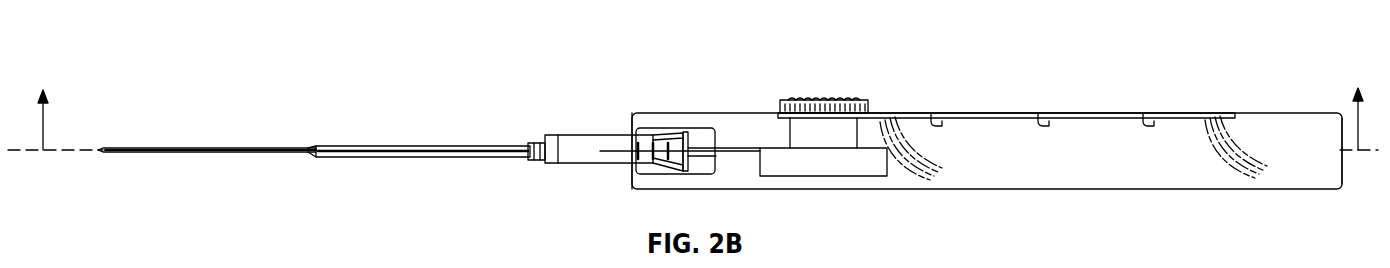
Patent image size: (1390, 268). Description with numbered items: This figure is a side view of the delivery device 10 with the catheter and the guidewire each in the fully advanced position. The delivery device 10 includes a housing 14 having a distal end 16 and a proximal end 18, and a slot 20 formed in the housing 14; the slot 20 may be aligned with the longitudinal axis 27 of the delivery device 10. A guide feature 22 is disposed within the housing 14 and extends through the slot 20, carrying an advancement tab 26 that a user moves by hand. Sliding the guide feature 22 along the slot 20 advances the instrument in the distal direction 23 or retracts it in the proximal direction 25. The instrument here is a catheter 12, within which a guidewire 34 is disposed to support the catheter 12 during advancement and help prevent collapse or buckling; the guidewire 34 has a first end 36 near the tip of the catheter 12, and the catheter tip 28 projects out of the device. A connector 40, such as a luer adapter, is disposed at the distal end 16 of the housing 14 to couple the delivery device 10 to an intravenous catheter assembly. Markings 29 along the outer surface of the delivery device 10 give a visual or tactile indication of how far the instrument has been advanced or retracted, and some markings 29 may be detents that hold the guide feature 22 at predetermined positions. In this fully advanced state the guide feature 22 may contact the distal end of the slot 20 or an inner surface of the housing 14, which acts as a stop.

The delivery device 10 is at (1269, 35).
The catheter 12 is at (728, 148).
The housing 14 is at (1258, 113).
The distal end 16 is at (661, 66).
The proximal end 18 is at (1307, 107).
The slot 20 is at (1073, 113).
The guide feature 22 is at (867, 162).
The distal direction 23 is at (792, 52).
The proximal direction 25 is at (837, 52).
The advancement tab 26 is at (857, 100).
The longitudinal axis 27 is at (12, 153).
The cannula tip 28 is at (105, 150).
The markings 29 is at (932, 115).
The guidewire 34 is at (473, 146).
The first end 36 is at (317, 147).
The connector 40 is at (600, 152).